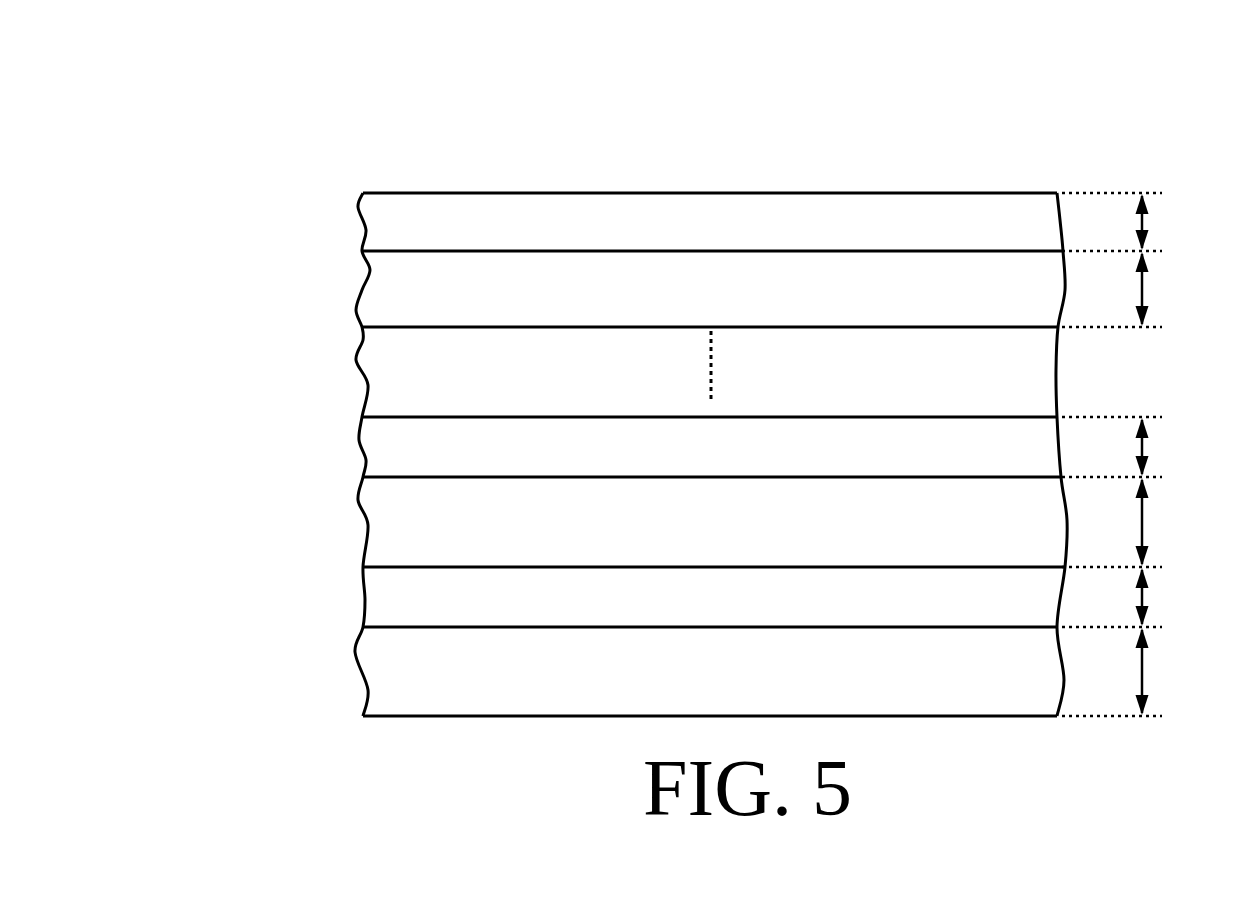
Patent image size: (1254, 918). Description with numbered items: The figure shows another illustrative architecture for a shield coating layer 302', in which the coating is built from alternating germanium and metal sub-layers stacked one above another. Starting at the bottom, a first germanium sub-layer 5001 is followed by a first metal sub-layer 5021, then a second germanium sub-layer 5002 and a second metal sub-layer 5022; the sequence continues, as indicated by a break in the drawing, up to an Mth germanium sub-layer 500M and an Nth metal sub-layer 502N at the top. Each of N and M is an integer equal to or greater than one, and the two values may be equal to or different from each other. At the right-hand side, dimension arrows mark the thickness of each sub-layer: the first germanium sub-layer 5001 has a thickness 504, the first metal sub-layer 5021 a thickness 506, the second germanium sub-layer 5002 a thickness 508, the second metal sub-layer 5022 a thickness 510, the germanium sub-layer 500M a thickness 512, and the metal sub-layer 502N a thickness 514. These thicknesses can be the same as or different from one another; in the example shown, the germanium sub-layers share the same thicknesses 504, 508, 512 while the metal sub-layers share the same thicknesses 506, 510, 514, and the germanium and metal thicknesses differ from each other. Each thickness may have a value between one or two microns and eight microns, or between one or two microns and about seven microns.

The shield coating layer 302' is at (636, 383).
The metal sub-layer 502N is at (710, 222).
The germanium sub-layer 500M is at (712, 289).
The metal sub-layer 5022 is at (709, 447).
The germanium sub-layer 5002 is at (712, 522).
The metal sub-layer 5021 is at (714, 597).
The germanium sub-layer 5001 is at (710, 671).
The thickness 504 is at (1128, 672).
The thickness 506 is at (1128, 597).
The thickness 508 is at (1128, 522).
The thickness 510 is at (1128, 447).
The thickness 512 is at (1128, 289).
The thickness 514 is at (1128, 222).